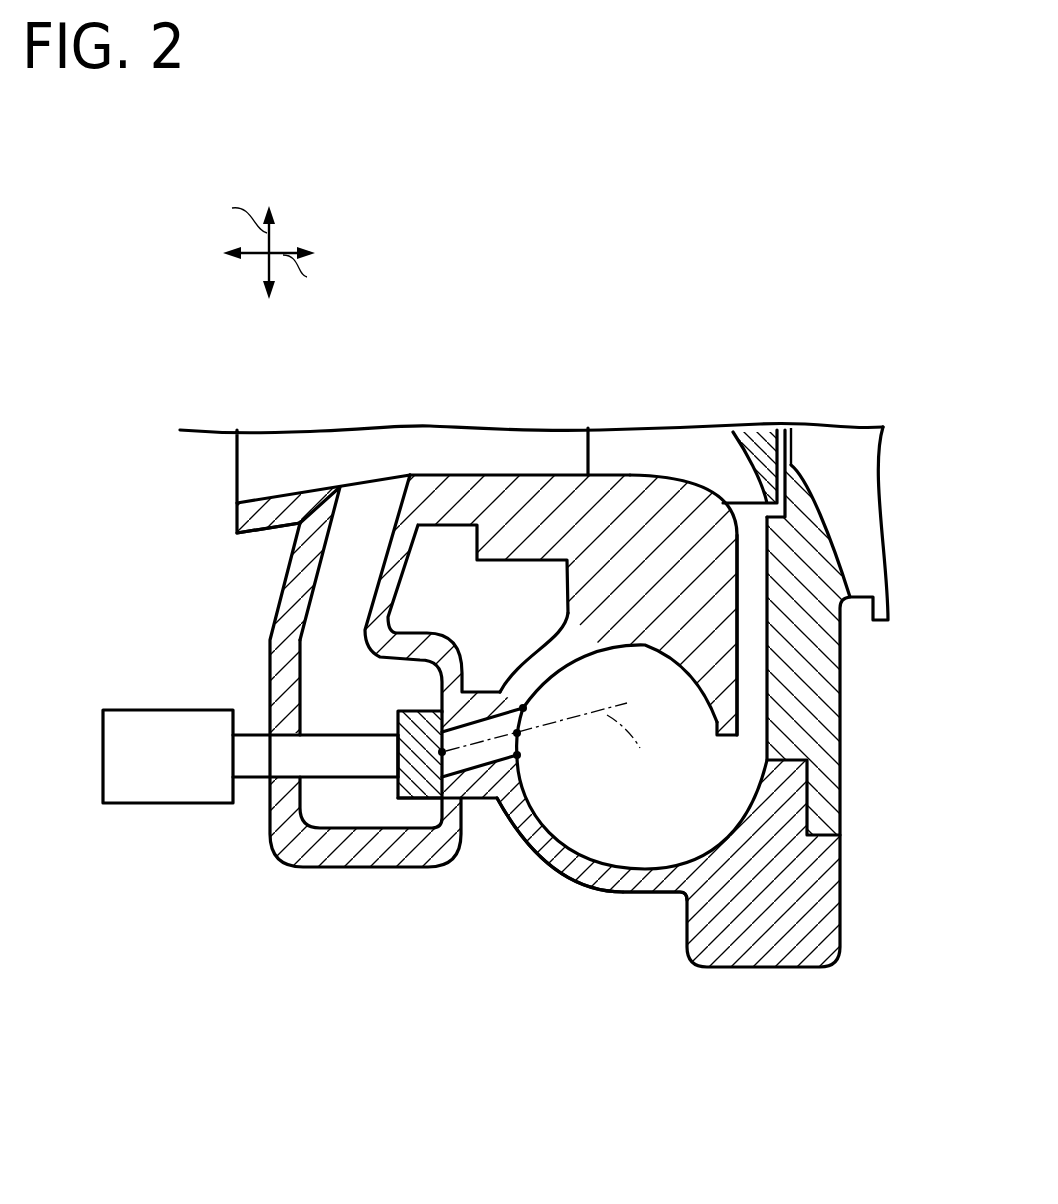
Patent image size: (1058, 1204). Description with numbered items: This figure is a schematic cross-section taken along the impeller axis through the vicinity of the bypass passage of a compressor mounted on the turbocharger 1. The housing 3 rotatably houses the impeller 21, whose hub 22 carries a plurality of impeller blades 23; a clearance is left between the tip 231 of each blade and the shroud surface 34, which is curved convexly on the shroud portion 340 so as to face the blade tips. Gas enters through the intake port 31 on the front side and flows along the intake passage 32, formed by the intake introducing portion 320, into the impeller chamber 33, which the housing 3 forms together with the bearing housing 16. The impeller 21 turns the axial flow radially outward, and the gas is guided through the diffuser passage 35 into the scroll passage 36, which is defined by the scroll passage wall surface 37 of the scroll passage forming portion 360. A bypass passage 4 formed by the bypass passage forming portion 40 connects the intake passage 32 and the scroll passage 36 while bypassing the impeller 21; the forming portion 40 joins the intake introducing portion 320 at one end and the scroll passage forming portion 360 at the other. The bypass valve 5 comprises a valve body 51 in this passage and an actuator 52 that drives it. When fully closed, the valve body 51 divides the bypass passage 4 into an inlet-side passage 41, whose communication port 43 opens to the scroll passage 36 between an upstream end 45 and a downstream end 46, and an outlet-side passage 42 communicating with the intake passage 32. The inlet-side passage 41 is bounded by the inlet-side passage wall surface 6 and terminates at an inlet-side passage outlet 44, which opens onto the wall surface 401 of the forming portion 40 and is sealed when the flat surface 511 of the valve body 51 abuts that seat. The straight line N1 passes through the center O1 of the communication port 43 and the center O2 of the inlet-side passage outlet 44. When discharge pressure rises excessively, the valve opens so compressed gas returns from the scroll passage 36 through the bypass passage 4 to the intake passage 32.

The turbocharger 1 is at (136, 166).
The housing 3 is at (643, 702).
The bypass passage 4 is at (418, 664).
The bypass valve 5 is at (277, 842).
The inlet-side passage wall surface 6 is at (483, 727).
The bearing housing 16 is at (832, 757).
The impeller 21 is at (786, 455).
The hub 22 is at (786, 465).
The impeller blade 23 is at (590, 447).
The intake port 31 is at (237, 503).
The intake passage 32 is at (377, 468).
The impeller chamber 33 is at (672, 468).
The shroud surface 34 is at (677, 484).
The diffuser passage 35 is at (752, 668).
The scroll passage 36 is at (699, 734).
The scroll passage wall surface 37 is at (648, 852).
The bypass passage forming portion 40 is at (292, 560).
The inlet-side passage 41 is at (551, 794).
The outlet-side passage 42 is at (317, 611).
The communication port 43 is at (520, 735).
The inlet-side passage outlet 44 is at (440, 754).
The upstream end 45 is at (517, 756).
The downstream end 46 is at (523, 706).
The valve body 51 is at (340, 841).
The actuator 52 is at (162, 805).
The tip 231 is at (613, 475).
The intake introducing portion 320 is at (283, 510).
The shroud portion 340 is at (695, 503).
The scroll passage forming portion 360 is at (628, 893).
The wall surface 401 is at (420, 712).
The flat surface 511 is at (413, 783).
The center of the communication port O1 is at (520, 730).
The center of the inlet-side passage outlet O2 is at (444, 755).
The straight line N1 is at (553, 743).